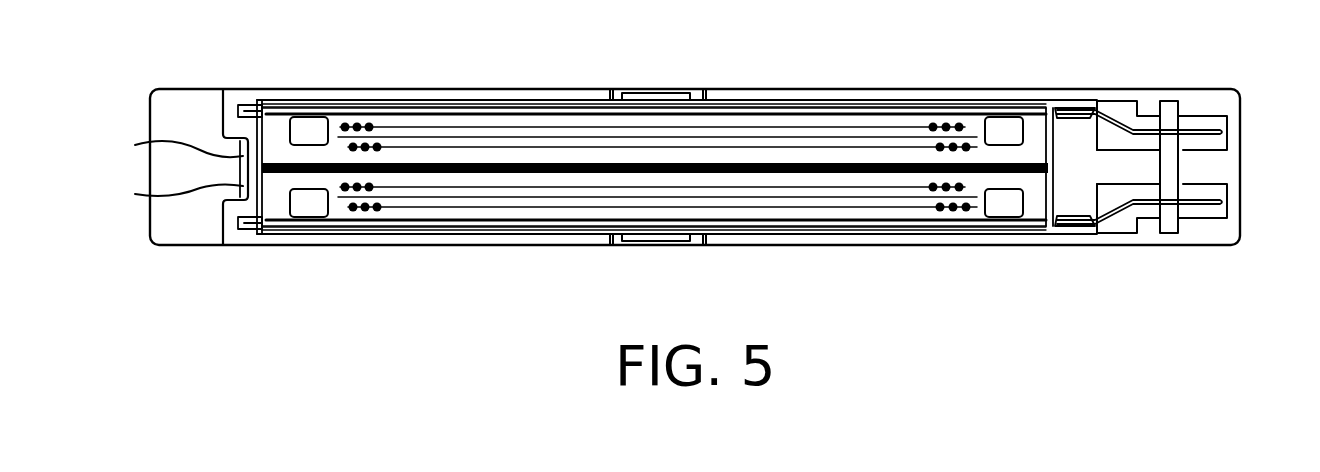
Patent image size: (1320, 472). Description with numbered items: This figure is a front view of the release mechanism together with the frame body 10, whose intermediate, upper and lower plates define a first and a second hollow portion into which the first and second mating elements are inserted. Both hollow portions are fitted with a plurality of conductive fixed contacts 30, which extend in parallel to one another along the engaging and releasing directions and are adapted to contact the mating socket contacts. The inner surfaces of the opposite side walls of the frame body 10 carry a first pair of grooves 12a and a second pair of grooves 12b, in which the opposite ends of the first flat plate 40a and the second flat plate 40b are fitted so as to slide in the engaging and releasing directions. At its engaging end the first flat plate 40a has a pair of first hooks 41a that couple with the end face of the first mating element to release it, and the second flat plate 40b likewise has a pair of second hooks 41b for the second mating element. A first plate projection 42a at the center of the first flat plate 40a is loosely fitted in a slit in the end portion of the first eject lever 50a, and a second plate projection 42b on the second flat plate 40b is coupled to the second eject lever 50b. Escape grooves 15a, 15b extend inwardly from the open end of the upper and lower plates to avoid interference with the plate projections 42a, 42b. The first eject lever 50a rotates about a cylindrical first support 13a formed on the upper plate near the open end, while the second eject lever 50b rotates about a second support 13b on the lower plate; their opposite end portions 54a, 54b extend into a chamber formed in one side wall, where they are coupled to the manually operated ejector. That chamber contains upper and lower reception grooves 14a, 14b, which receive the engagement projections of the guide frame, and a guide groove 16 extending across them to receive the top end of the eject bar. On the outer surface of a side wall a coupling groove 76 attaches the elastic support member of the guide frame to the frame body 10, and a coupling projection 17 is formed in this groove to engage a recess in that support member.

The frame body 10 is at (1240, 92).
The first pair of grooves 12a is at (246, 103).
The second pair of grooves 12b is at (256, 232).
The first support 13a is at (843, 99).
The second support 13b is at (820, 235).
The upper reception groove 14a is at (1210, 100).
The lower reception groove 14b is at (1210, 245).
The escape groove 15a is at (700, 89).
The escape groove 15b is at (700, 246).
The guide groove 16 is at (1170, 233).
The end wall groove 17 is at (174, 147).
The fixed contacts 30 is at (373, 125).
The first flat plate 40a is at (456, 101).
The second flat plate 40b is at (456, 231).
The first hooks 41a is at (308, 130).
The second hooks 41b is at (310, 205).
The first plate projection 42a is at (640, 91).
The second plate projection 42b is at (660, 246).
The first eject lever 50a is at (766, 112).
The second eject lever 50b is at (906, 222).
The opposite end portion 54a is at (1227, 150).
The opposite end portion 54b is at (1227, 184).
The coupling groove 76 is at (171, 197).